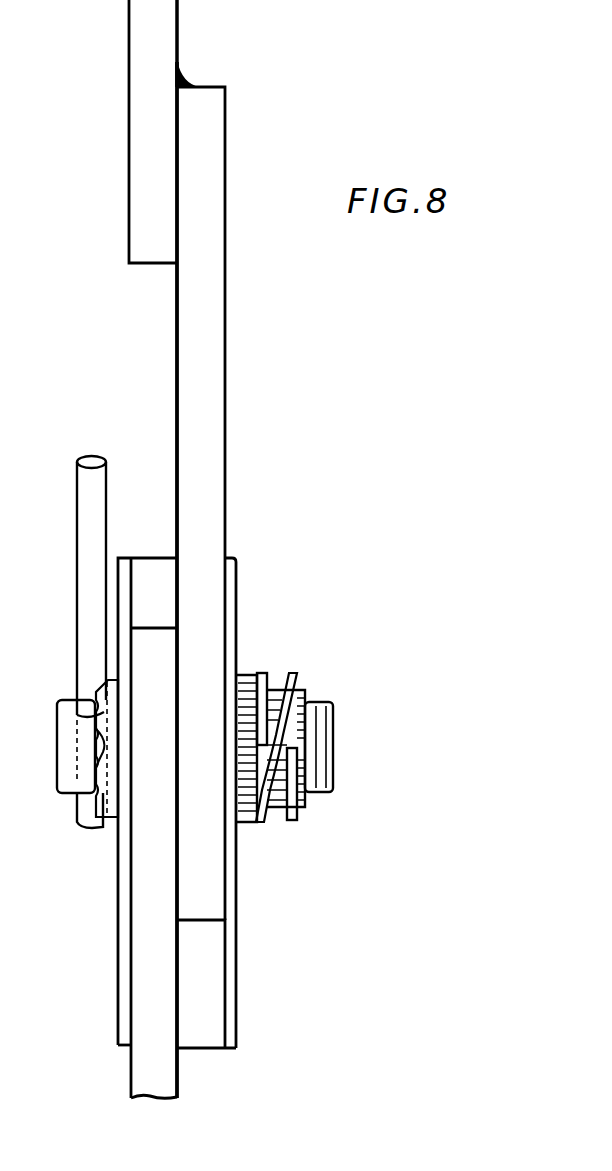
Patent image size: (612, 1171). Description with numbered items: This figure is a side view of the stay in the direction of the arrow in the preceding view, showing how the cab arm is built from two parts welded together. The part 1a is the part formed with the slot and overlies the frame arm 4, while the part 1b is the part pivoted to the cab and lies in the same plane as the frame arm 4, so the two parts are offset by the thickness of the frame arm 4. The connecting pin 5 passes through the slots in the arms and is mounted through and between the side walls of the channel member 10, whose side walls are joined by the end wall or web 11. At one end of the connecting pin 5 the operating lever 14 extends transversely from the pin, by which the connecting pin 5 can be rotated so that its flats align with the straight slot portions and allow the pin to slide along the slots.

The part of cab arm 1a is at (212, 333).
The part of cab arm 1b is at (150, 43).
The frame arm 4 is at (148, 1070).
The connecting pin 5 is at (345, 732).
The channel member 10 is at (241, 955).
The end wall or web 11 is at (210, 1000).
The operating lever 14 is at (93, 490).